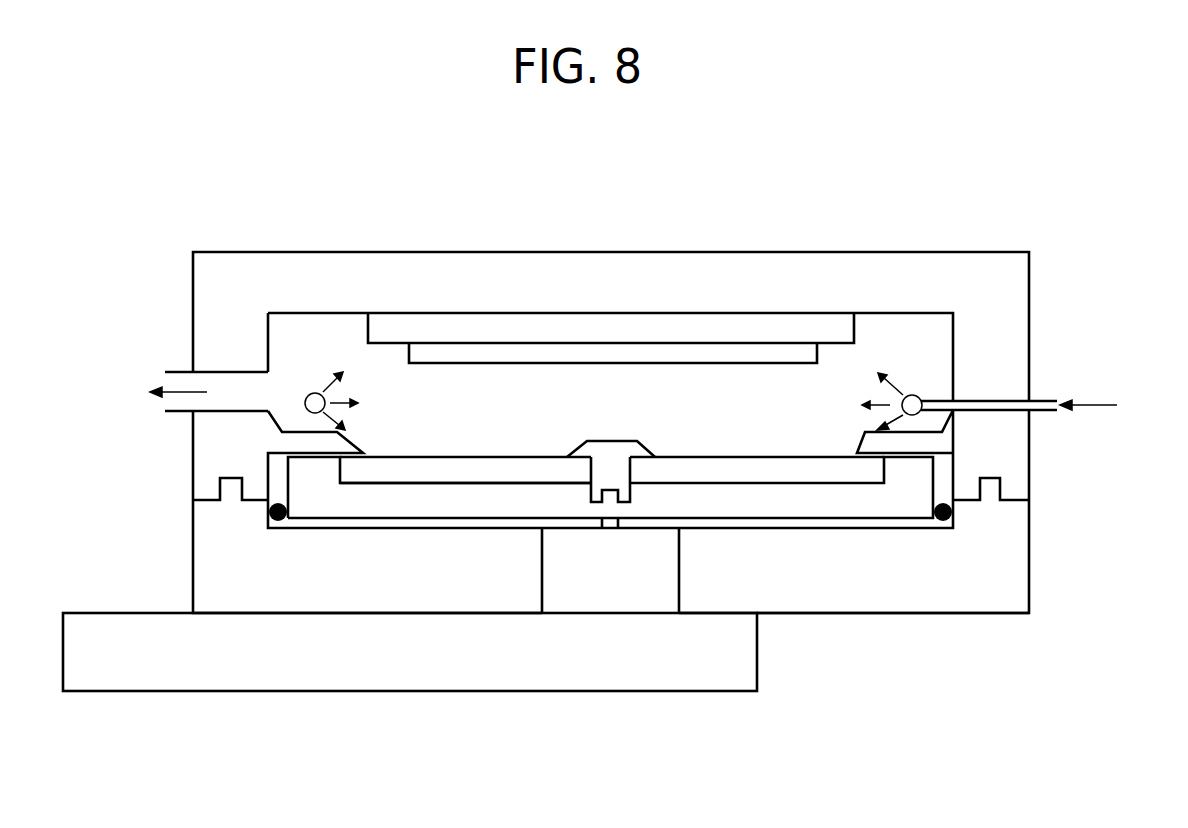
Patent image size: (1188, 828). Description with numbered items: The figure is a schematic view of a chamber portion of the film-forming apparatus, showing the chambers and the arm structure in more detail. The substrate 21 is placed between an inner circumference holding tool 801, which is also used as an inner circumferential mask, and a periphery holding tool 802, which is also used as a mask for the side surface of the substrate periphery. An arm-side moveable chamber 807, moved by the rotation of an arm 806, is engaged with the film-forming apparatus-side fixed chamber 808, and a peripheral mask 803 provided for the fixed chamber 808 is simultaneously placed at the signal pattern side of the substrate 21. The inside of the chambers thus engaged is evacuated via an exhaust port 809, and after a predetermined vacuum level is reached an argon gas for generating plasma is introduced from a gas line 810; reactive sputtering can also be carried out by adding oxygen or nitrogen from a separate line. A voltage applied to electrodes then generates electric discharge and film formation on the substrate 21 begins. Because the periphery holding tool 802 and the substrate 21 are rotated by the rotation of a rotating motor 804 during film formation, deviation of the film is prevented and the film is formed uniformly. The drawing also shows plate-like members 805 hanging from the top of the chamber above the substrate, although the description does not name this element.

The substrate 21 is at (468, 468).
The inner circumference holding tool 801 is at (608, 452).
The periphery holding tool 802 is at (478, 497).
The peripheral mask 803 is at (935, 442).
The rotating motor 804 is at (633, 587).
The heater plates 805 is at (560, 358).
The arm 806 is at (260, 652).
The arm-side moveable chamber 807 is at (902, 588).
The film-forming apparatus-side fixed chamber 808 is at (1000, 303).
The exhaust port 809 is at (167, 370).
The gas line 810 is at (1048, 397).